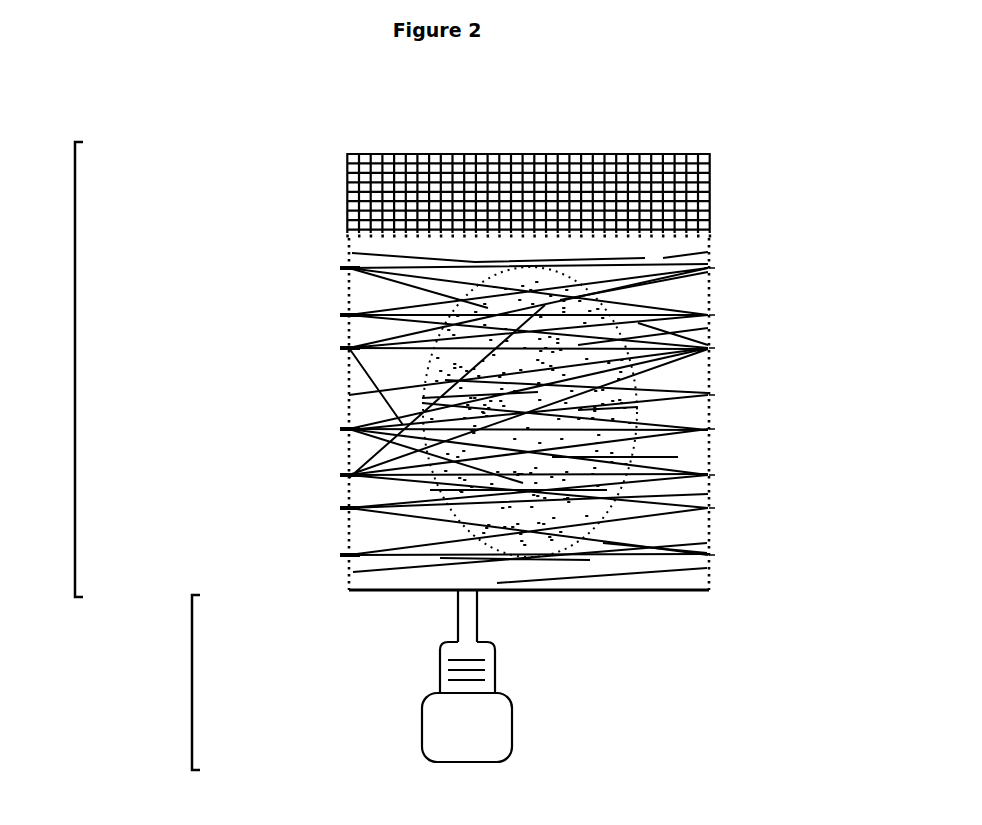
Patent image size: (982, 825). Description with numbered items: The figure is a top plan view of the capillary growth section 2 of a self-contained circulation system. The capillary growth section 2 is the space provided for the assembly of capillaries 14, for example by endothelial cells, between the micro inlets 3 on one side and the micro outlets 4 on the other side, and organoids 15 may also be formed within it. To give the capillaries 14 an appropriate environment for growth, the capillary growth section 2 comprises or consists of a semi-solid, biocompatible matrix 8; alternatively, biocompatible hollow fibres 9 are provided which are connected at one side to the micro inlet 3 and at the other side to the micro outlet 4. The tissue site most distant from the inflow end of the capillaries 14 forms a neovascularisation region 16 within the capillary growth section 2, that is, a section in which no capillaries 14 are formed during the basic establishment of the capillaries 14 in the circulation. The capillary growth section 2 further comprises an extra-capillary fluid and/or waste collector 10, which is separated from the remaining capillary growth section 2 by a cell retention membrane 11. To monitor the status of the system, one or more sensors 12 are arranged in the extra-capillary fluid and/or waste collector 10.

The capillary growth section 2 is at (75, 370).
The neovascularisation region 16 is at (345, 182).
The micro inlet 3 is at (720, 507).
The micro outlet 4 is at (345, 428).
The capillary 14 is at (377, 456).
The organoid 15 is at (417, 397).
The biocompatible hollow fibre 9 is at (682, 283).
The semi-solid biocompatible matrix 8 is at (688, 415).
The extra-capillary fluid and/or waste collector 10 is at (192, 683).
The cell retention membrane 11 is at (472, 594).
The sensor 12 is at (450, 668).